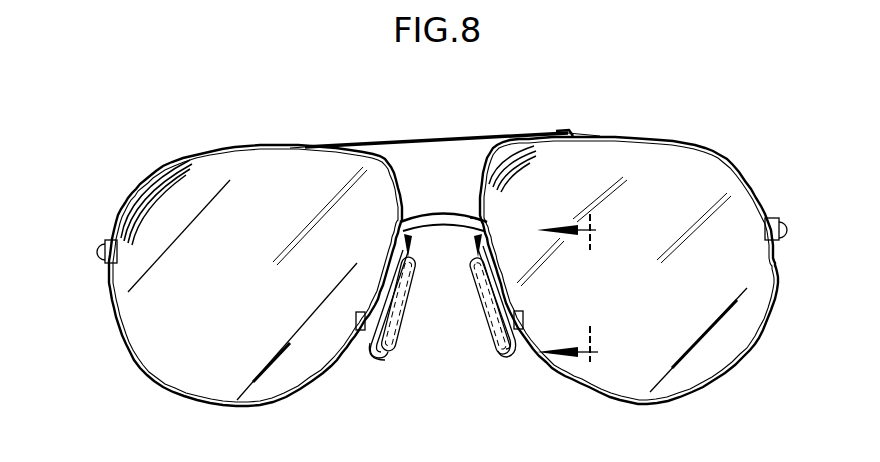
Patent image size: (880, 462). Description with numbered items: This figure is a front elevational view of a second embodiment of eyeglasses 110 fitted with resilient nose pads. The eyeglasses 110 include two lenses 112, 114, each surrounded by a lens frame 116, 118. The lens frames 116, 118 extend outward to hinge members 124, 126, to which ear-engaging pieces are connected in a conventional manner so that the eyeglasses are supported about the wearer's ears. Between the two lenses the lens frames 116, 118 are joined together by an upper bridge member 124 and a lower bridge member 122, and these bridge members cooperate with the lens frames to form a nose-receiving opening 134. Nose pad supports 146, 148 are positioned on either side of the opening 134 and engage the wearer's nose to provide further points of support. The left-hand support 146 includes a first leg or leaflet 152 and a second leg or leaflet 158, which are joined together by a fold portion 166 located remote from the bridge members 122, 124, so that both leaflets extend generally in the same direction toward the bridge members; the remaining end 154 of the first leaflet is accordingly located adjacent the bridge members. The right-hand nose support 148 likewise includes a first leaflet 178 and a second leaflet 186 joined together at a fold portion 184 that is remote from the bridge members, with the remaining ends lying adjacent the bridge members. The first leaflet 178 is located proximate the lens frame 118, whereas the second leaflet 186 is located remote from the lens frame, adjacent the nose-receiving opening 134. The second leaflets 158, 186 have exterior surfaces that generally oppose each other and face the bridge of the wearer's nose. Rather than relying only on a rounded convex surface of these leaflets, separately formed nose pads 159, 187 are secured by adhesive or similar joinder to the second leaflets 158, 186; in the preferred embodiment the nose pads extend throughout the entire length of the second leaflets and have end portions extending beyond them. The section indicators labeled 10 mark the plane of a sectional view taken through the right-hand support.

The eyeglasses 110 is at (582, 92).
The lens 112 is at (313, 357).
The lens 114 is at (637, 377).
The lens frame 116 is at (270, 406).
The lens frame 118 is at (725, 377).
The lower bridge member 122 is at (410, 214).
The upper bridge member / hinge member 124 is at (453, 137).
The hinge member 126 is at (780, 221).
The nose-receiving opening 134 is at (463, 252).
The nose pad support 146 is at (401, 223).
The nose pad support 148 is at (484, 233).
The first leg or leaflet 152 is at (358, 334).
The remaining end 154 is at (393, 270).
The second leg or leaflet 158 is at (409, 345).
The nose pad 159 is at (413, 302).
The fold portion 166 is at (379, 350).
The first leaflet 178 is at (522, 322).
The fold portion 184 is at (512, 358).
The second leaflet 186 is at (480, 342).
The nose pad 187 is at (450, 325).
The section line 10- 10 is at (583, 288).